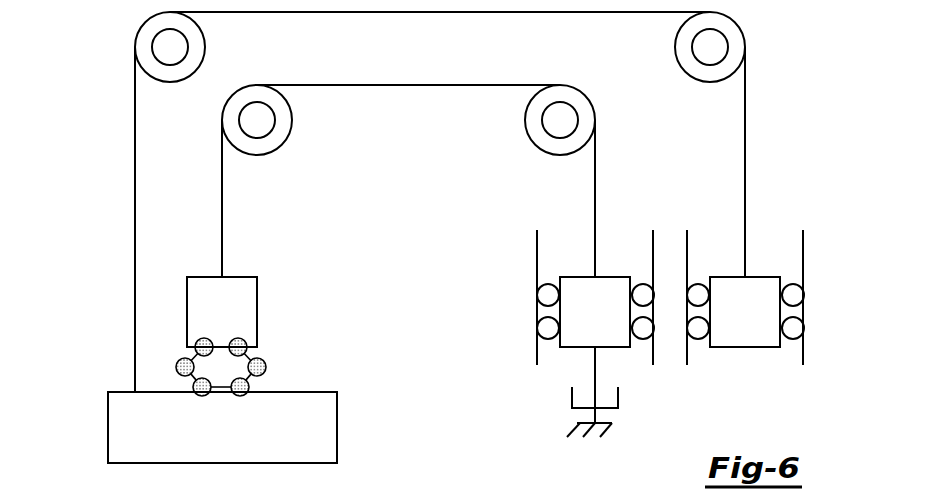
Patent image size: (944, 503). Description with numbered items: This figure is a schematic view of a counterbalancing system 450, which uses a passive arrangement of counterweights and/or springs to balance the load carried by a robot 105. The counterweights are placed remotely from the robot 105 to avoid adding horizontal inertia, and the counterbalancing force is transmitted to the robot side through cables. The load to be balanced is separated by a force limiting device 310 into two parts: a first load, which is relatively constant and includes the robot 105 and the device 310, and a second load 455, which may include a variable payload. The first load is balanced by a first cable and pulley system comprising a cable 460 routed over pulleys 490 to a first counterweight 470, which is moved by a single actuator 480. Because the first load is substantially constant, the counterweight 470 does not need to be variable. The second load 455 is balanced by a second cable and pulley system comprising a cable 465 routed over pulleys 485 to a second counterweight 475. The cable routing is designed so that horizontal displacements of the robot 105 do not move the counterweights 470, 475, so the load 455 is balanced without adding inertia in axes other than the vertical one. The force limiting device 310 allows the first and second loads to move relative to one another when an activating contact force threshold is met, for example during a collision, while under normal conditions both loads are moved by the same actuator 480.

The counterbalancing system 450 is at (85, 86).
The routing pulleys 485 is at (195, 53).
The routing pulleys 490 is at (283, 127).
The cable 465 is at (745, 135).
The cable 460 is at (595, 189).
The robot 105 is at (247, 310).
The force limiting device 310 is at (276, 358).
The load 455 is at (327, 432).
The counterweight 470 is at (612, 330).
The counterweight 475 is at (762, 330).
The actuator 480 is at (572, 397).